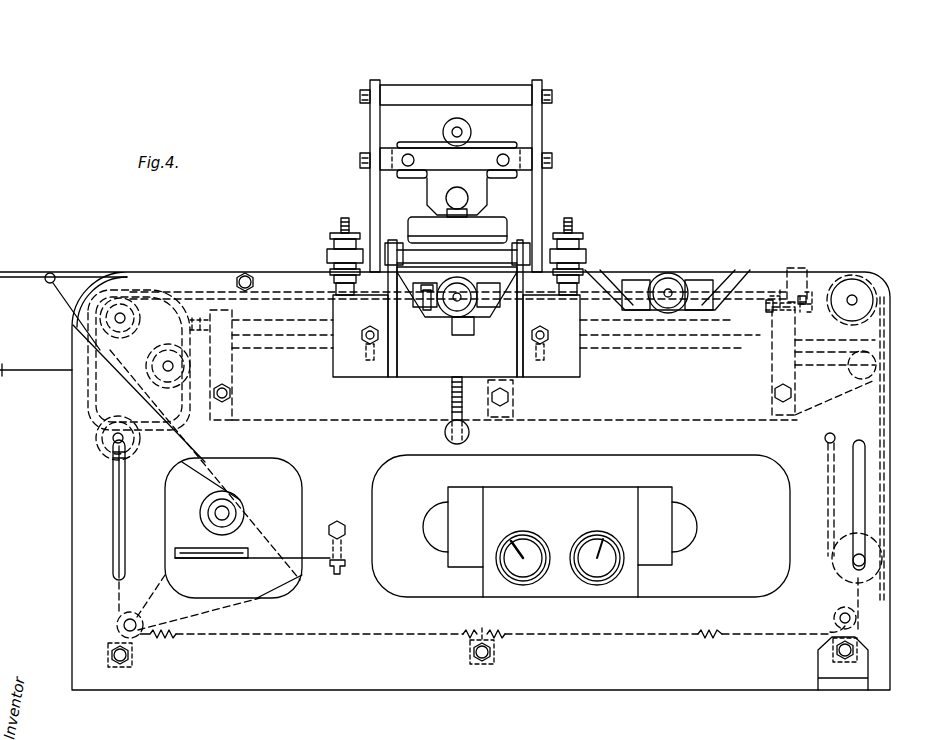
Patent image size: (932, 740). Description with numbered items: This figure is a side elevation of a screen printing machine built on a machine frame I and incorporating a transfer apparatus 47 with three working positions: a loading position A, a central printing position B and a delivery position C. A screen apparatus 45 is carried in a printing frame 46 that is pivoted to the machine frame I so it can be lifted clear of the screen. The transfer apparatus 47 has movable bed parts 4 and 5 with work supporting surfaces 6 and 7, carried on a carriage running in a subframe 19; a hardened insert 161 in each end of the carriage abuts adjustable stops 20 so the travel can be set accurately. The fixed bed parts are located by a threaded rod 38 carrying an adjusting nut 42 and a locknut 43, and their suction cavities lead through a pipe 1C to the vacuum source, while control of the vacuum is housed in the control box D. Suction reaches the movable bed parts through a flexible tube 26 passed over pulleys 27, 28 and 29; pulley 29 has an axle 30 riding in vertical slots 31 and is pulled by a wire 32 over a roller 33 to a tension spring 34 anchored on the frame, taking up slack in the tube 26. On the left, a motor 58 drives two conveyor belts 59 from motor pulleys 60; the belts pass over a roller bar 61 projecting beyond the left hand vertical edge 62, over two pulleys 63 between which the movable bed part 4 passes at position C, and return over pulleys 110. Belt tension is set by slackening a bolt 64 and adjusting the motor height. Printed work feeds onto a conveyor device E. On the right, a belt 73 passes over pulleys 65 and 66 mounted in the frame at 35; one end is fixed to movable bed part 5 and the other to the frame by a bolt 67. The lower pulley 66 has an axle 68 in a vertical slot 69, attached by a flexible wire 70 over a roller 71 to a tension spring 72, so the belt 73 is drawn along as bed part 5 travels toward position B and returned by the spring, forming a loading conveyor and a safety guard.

The machine frame I is at (76, 503).
The conveyor device E is at (28, 270).
The screen apparatus 45 is at (385, 121).
The printing frame 46 is at (542, 127).
The working position B is at (475, 232).
The work supporting surface 6 is at (420, 270).
The movable bed part 4 is at (490, 266).
The pipe 1C is at (430, 285).
The threaded rod 38 is at (460, 305).
The adjusting nut 42 is at (447, 320).
The locknut 43 is at (462, 278).
The transfer apparatus 47 is at (615, 296).
The movable bed part 5 is at (641, 270).
The work supporting surface 7 is at (692, 270).
The loading position A is at (722, 266).
The hardened insert 161 is at (782, 290).
The adjustable stop 20 is at (770, 342).
The pulley 27 is at (138, 322).
The pulley 28 is at (173, 388).
The pulley 29 is at (98, 430).
The flexible tube 26 is at (92, 390).
The left hand vertical edge 62 is at (72, 335).
The pulley 110 is at (72, 356).
The conveyor belt 59 is at (186, 452).
The roller bar 61 is at (47, 284).
The pulley 63 is at (251, 278).
The delivery position C is at (229, 264).
The subframe 19 is at (232, 388).
The vertical slot 31 is at (125, 528).
The axle 30 is at (127, 450).
The wire 32 is at (118, 612).
The roller 33 is at (145, 618).
The tension spring 34 is at (218, 636).
The machine frame anchor point 35 is at (472, 652).
The tension spring 72 is at (666, 636).
The motor 58 is at (190, 531).
The motor pulley 60 is at (246, 520).
The bolt 64 is at (337, 520).
The control box D is at (581, 526).
The pulley 65 is at (854, 284).
The belt 73 is at (888, 352).
The vertical slot 69 is at (862, 480).
The axle 68 is at (852, 558).
The bolt 67 is at (834, 434).
The lower pulley 66 is at (886, 556).
The flexible wire 70 is at (856, 594).
The roller 71 is at (836, 616).